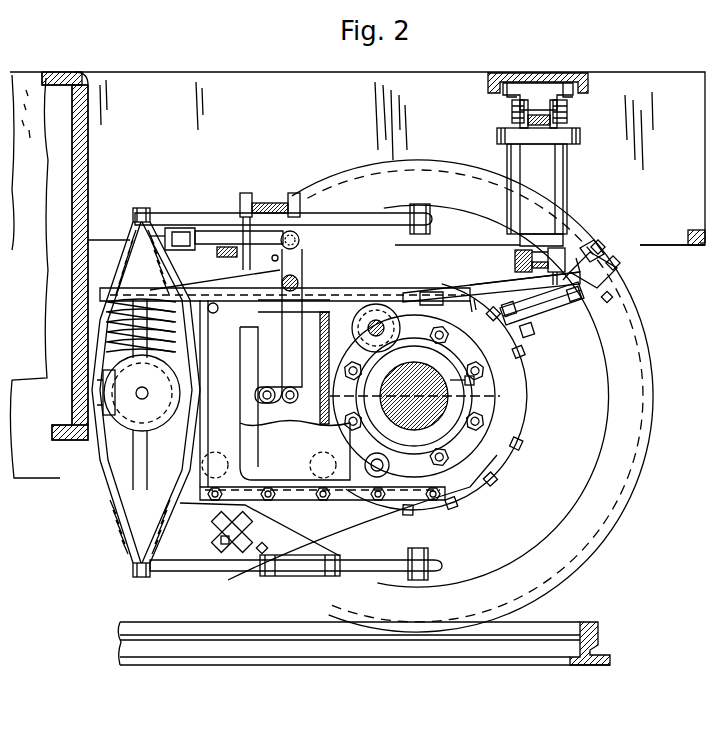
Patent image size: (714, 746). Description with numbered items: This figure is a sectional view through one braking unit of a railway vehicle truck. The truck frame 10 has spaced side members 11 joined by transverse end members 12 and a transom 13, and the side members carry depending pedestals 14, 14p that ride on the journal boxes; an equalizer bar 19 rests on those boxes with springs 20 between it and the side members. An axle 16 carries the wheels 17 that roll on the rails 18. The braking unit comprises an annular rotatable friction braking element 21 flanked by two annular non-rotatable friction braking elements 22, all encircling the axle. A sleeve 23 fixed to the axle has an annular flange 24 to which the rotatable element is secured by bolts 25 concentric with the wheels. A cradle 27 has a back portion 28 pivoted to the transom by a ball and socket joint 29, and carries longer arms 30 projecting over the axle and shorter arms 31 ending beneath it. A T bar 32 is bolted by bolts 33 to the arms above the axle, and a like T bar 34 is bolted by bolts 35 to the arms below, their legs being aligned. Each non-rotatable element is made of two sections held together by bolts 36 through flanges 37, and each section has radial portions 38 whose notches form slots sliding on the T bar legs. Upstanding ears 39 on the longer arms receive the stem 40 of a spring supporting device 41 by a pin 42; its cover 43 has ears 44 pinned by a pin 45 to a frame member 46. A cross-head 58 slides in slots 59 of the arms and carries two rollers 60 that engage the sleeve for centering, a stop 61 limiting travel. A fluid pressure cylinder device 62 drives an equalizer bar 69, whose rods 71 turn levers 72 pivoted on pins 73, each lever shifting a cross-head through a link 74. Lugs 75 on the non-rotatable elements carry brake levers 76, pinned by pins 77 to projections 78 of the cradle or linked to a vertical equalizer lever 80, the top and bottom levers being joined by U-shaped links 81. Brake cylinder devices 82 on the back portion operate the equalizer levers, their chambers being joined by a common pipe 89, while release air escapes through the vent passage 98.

The truck frame 10 is at (224, 78).
The side members 11 is at (147, 83).
The end members 12 is at (706, 157).
The transom 13 is at (84, 168).
The pedestals 14 is at (223, 271).
The cross frame member (prime) 14p is at (635, 250).
The axle 16 is at (487, 400).
The wheels 17 is at (632, 468).
The rails 18 is at (585, 622).
The equalizer bar 19 is at (30, 463).
The springs 20 is at (105, 312).
The rotatable friction braking element 21 is at (525, 428).
The non-rotatable friction braking elements 22 is at (577, 467).
The sleeves 23 is at (455, 372).
The annular flange 24 is at (477, 381).
The bolts 25 is at (358, 362).
The cradle 27 is at (180, 463).
The back portion 28 is at (107, 463).
The ball and socket joint 29 is at (95, 390).
The arms 30 is at (470, 260).
The arms 31 is at (407, 508).
The T bar 32 is at (592, 245).
The bolts 33 is at (620, 246).
The T bar 34 is at (220, 530).
The bolts 35 is at (222, 542).
The bolts 36 is at (562, 300).
The flanges 37 is at (518, 292).
The portion 38 is at (262, 548).
The ears 39 is at (522, 277).
The stem 40 is at (520, 241).
The spring supporting device 41 is at (560, 174).
The pin 42 is at (515, 259).
The cover 43 is at (580, 130).
The ears 44 is at (551, 120).
The pin 45 is at (512, 110).
The member 46 is at (536, 74).
The cross-head 58 is at (262, 432).
The slots 59 is at (405, 305).
The rollers 60 is at (440, 346).
The stop 61 is at (425, 293).
The cylinder device 62 is at (298, 196).
The equalizer bar 69 is at (152, 233).
The rod 71 is at (207, 231).
The lever 72 is at (295, 258).
The pin 73 is at (298, 283).
The link 74 is at (278, 375).
The lugs 75 is at (428, 215).
The brake lever 76 is at (378, 220).
The pins 77 is at (141, 207).
The projections 78 is at (130, 236).
The equalizer lever 80 is at (138, 440).
The links 81 is at (305, 243).
The brake cylinder devices 82 is at (133, 423).
The pipe 89 is at (138, 398).
The vent passage 98 is at (212, 313).